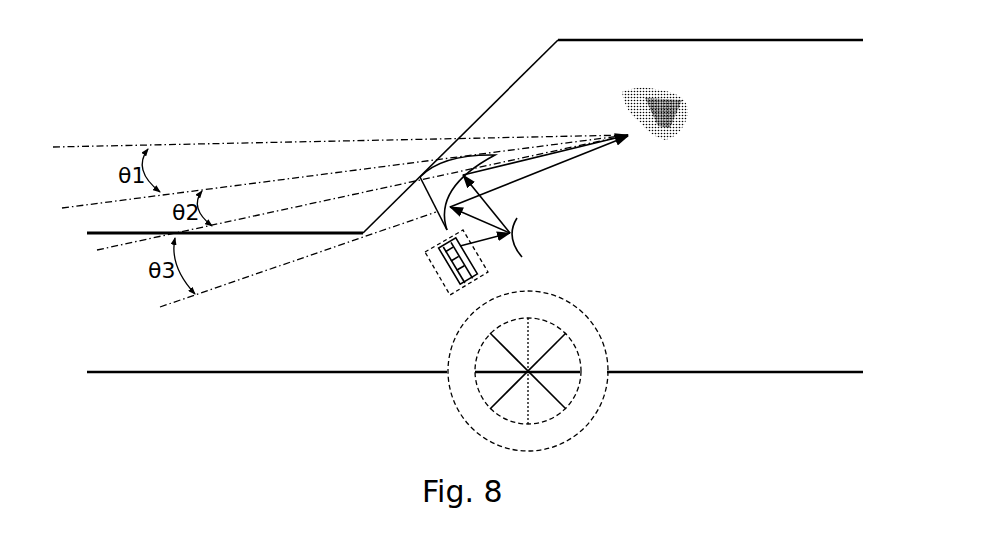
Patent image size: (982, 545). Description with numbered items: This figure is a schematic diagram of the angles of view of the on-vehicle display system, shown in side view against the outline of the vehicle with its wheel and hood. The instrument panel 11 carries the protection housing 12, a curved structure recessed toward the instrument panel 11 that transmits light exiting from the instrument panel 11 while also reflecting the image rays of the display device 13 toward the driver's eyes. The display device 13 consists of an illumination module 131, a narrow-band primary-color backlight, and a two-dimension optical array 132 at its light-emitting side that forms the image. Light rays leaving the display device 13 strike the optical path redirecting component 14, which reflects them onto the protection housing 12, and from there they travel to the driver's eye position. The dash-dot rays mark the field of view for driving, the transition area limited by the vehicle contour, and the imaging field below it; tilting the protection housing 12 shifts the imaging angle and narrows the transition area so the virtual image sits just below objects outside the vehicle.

The instrument panel 11 is at (432, 205).
The protection housing 12 is at (463, 176).
The display device 13 is at (453, 297).
The illumination module 131 is at (438, 260).
The two-dimension optical array 132 is at (484, 274).
The optical path redirecting component 14 is at (520, 251).